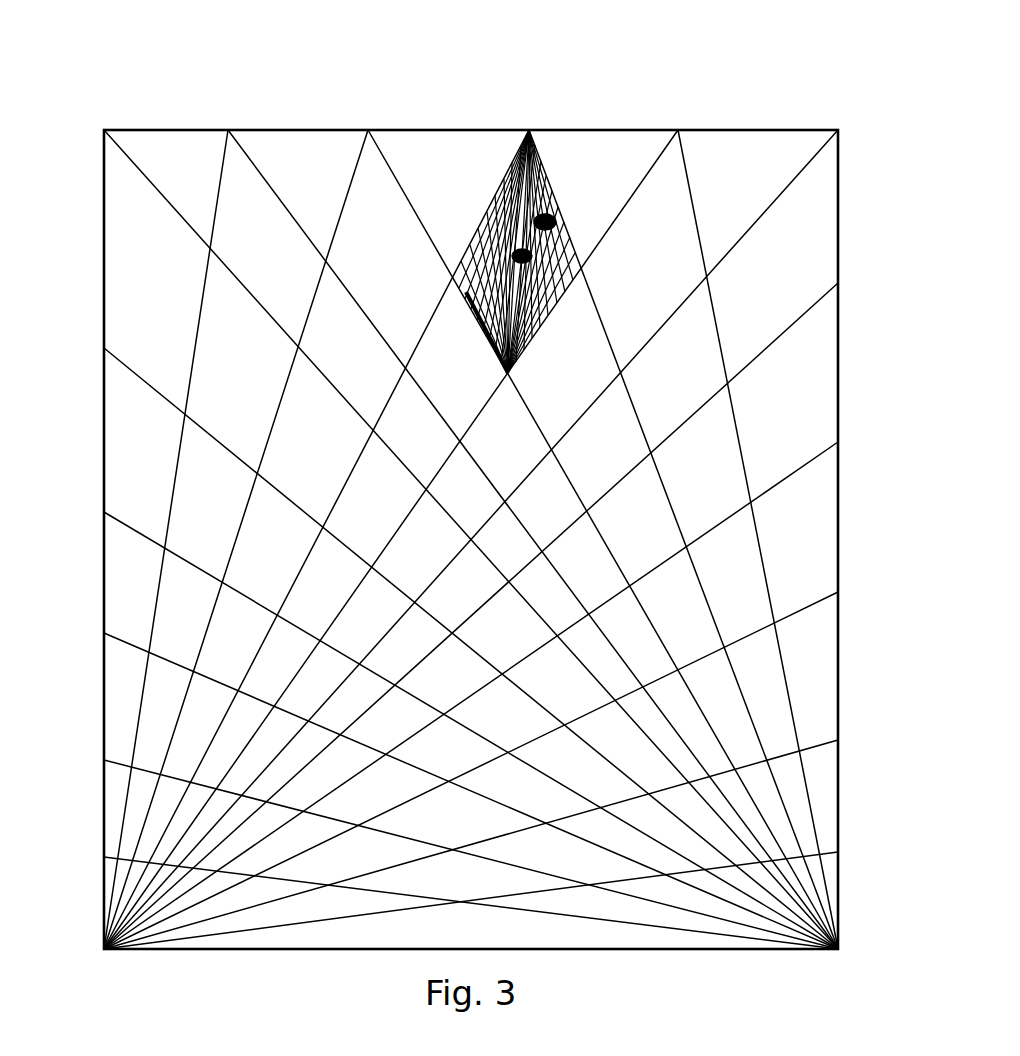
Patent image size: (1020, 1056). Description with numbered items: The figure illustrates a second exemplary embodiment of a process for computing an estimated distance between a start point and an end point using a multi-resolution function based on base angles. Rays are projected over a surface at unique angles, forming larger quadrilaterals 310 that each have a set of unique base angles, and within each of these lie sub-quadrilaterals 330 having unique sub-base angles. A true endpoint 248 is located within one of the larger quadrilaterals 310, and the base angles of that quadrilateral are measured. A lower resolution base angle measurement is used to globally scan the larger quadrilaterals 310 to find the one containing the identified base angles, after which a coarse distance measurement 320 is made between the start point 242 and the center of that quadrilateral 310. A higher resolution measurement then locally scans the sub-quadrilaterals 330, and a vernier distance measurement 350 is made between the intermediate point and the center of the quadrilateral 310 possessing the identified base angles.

The start point 242 is at (439, 543).
The true endpoint 248 is at (556, 221).
The quadrilateral 310 is at (540, 118).
The coarse distance measurement 320 is at (465, 340).
The sub-quadrilateral 330 is at (540, 192).
The vernier distance measurement 350 is at (584, 251).